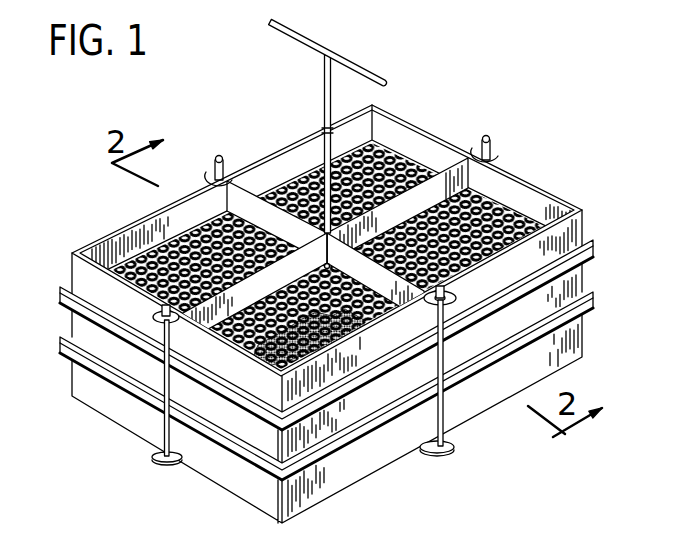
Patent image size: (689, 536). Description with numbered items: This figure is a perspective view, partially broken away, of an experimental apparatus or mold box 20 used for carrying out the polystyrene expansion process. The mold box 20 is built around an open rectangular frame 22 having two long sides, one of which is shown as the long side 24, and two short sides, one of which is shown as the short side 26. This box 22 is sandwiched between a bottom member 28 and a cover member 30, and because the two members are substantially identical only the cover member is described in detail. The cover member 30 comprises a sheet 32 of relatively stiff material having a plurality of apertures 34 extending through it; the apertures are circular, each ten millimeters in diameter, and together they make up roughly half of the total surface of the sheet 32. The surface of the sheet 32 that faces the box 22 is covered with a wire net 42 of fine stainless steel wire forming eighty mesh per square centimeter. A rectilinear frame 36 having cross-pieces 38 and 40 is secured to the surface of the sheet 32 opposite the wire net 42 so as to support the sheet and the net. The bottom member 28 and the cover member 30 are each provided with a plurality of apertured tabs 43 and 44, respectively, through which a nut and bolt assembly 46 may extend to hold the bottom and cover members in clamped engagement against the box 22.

The mold box 20 is at (525, 173).
The open rectangular frame 22 is at (585, 273).
The long side 24 is at (323, 430).
The short side 26 is at (78, 328).
The bottom member 28 is at (582, 331).
The cover member 30 is at (583, 218).
The sheet 32 is at (418, 165).
The apertures 34 is at (373, 158).
The rectilinear frame 36 is at (105, 233).
The cross-piece 38 is at (250, 200).
The cross-piece 40 is at (458, 181).
The wire net 42 is at (257, 351).
The apertured tabs 43 is at (452, 441).
The apertured tabs 44 is at (445, 297).
The nut and bolt assembly 46 is at (440, 401).